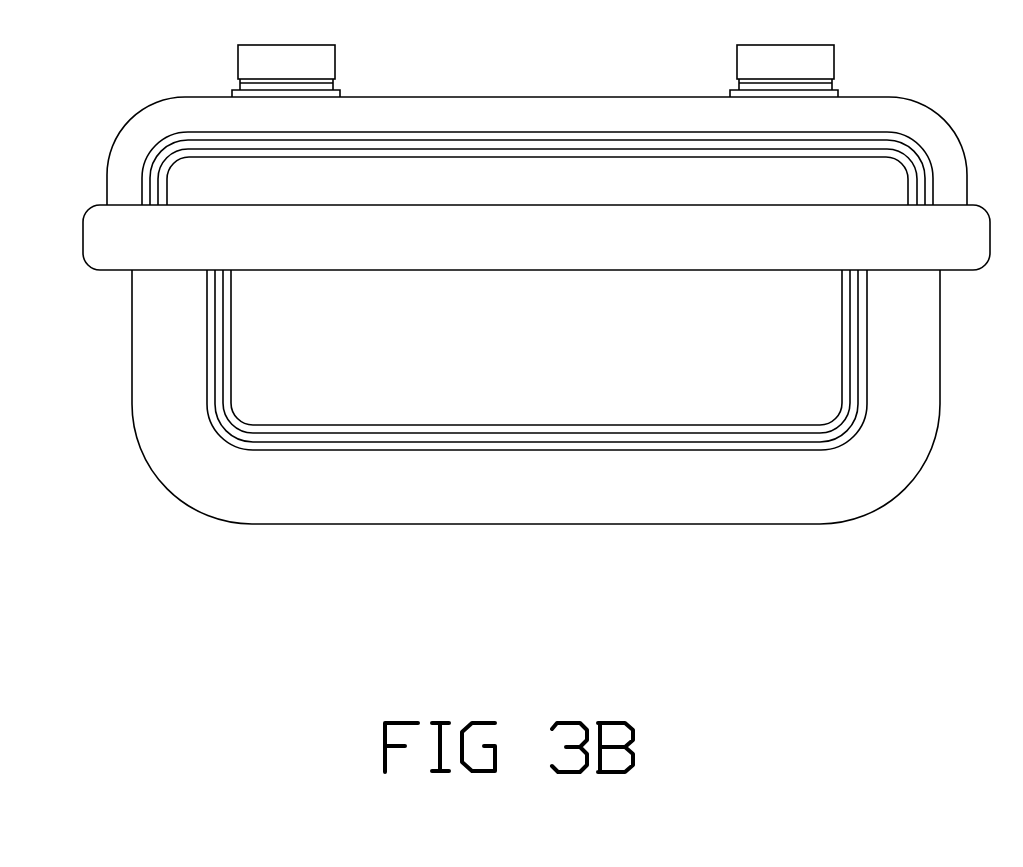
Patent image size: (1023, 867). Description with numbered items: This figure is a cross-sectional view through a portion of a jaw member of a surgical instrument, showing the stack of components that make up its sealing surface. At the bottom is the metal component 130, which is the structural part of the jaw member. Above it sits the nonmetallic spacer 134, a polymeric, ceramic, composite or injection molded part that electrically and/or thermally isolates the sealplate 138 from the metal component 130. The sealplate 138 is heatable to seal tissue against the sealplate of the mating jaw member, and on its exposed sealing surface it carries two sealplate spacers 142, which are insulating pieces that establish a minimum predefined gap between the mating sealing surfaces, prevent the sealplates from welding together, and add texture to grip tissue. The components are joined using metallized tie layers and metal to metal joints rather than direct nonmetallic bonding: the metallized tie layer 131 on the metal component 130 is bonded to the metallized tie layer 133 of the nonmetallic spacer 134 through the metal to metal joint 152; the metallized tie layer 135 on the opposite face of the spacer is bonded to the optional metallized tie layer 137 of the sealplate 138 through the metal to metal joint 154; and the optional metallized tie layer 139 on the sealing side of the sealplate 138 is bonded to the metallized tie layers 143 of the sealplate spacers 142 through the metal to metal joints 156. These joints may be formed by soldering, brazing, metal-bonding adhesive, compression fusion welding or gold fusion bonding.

The metal component 130 is at (559, 505).
The metallized tie layer 131 is at (690, 447).
The metallized tie layer 133 is at (583, 430).
The nonmetallic spacer 134 is at (559, 310).
The metallized tie layer 135 is at (550, 152).
The metallized tie layer 137 is at (605, 138).
The sealplate 138 is at (479, 130).
The metallized tie layer 139 is at (338, 95).
The sealplate spacer 142 is at (313, 76).
The metallized tie layer 143 is at (337, 78).
The metal to metal joint 152 is at (220, 415).
The metal to metal joint 154 is at (150, 188).
The metal to metal joint 156 is at (243, 88).